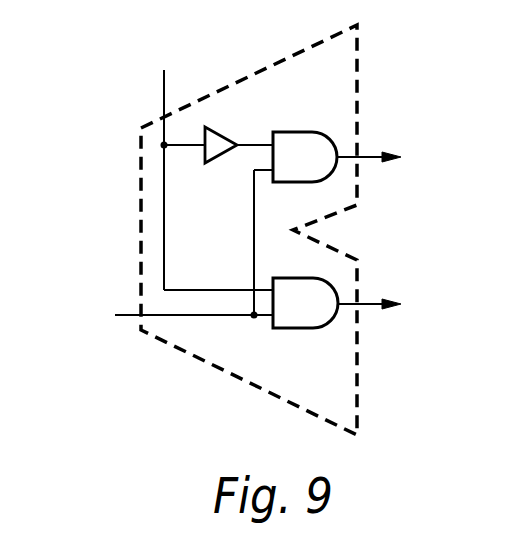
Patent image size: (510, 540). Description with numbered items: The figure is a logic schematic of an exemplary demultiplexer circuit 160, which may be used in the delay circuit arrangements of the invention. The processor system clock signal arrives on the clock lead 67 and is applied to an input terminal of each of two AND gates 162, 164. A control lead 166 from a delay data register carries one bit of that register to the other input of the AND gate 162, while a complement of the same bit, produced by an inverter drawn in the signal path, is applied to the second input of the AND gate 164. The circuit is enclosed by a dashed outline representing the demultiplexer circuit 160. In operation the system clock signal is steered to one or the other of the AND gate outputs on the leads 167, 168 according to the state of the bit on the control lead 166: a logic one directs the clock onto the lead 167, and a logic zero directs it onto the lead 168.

The demultiplexer circuit 160 is at (243, 261).
The AND gate 162 is at (310, 323).
The AND gate 164 is at (312, 117).
The control lead 166 is at (165, 93).
The lead 167 is at (368, 301).
The lead 168 is at (368, 154).
The clock lead 67 is at (121, 315).